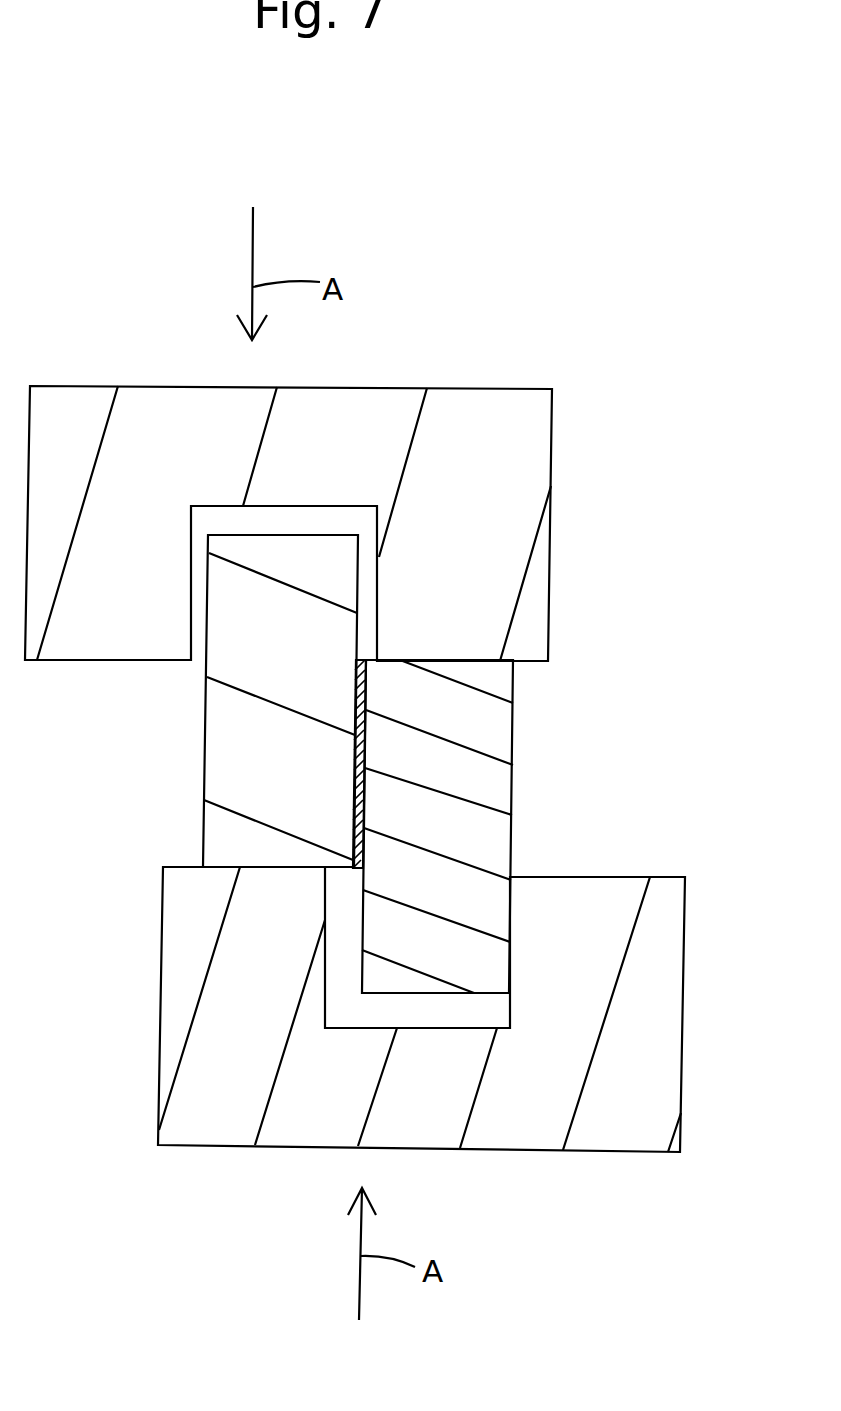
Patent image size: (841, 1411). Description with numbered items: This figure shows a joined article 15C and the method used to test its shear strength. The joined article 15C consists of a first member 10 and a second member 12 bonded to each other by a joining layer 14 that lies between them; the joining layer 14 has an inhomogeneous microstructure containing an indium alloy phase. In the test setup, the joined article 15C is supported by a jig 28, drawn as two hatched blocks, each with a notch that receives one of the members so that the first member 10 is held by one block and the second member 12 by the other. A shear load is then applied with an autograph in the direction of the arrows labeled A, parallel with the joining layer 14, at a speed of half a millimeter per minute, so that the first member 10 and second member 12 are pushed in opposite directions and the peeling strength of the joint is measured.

The jig 28 is at (532, 433).
The first member 10 is at (225, 718).
The second member 12 is at (485, 824).
The joining layer 14 is at (366, 710).
The joined article 15C is at (567, 785).